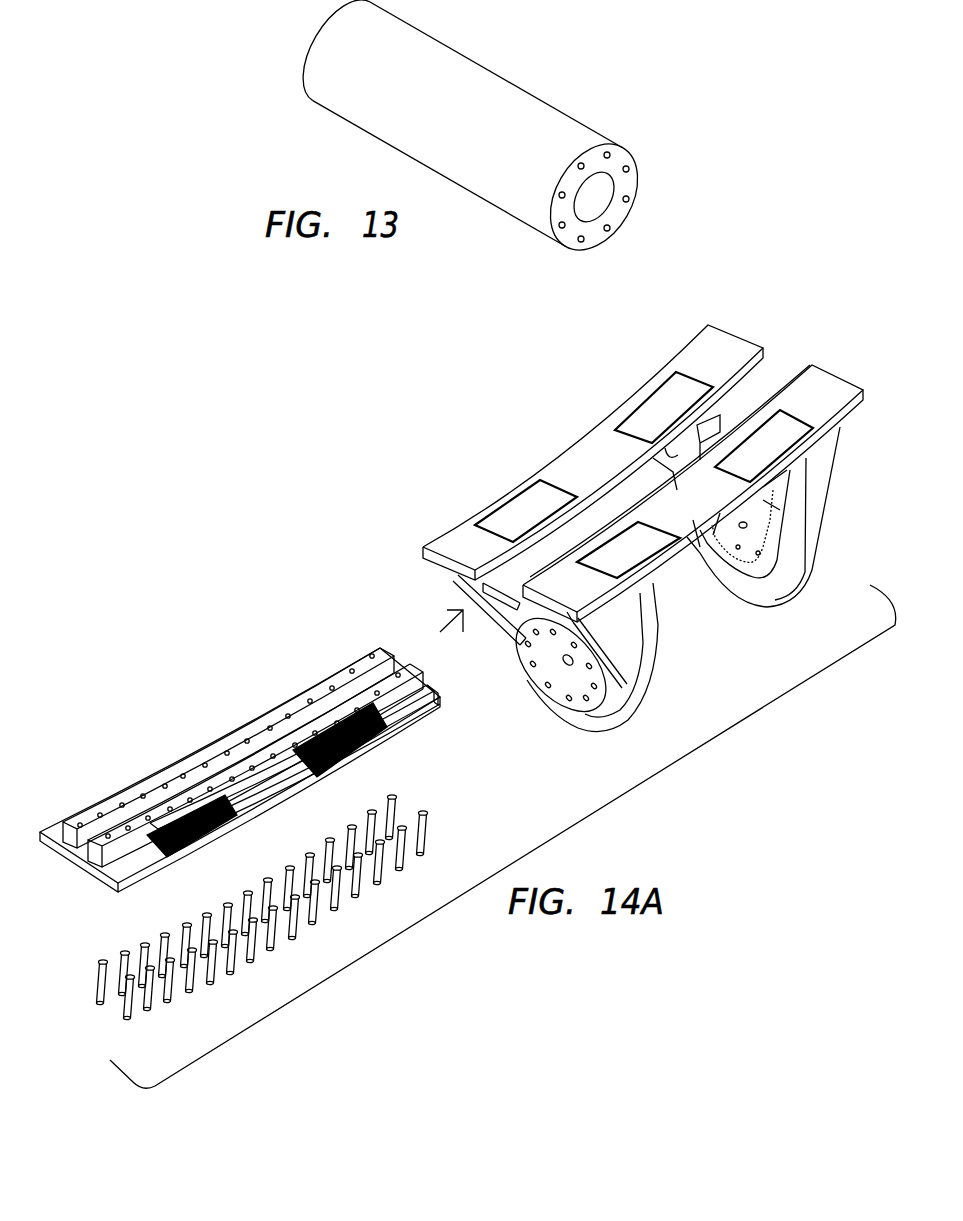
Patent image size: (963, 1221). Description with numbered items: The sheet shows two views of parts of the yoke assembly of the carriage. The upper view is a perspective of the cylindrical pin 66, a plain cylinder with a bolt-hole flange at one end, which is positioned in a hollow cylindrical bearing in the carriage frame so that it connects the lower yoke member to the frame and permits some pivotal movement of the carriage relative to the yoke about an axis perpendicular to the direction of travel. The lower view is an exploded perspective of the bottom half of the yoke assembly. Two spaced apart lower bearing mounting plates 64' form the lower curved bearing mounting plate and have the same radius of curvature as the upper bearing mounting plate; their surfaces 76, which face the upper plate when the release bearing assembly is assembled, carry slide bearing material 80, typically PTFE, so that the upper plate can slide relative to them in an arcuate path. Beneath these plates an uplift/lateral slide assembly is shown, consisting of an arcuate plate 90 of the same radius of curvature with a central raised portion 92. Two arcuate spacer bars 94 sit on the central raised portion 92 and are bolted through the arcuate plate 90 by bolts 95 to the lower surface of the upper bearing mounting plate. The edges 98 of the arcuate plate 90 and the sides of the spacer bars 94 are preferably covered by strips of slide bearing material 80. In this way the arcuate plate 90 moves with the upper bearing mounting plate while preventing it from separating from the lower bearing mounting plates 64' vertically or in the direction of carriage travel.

In FIG. 13, the cylindrical pin 66 is at (492, 75).
In FIG. 14A, the lower bearing mounting plates 64' is at (643, 468).
In FIG. 14A, the slide bearing material 80 is at (525, 493).
In FIG. 14A, the surfaces of lower bearing mounting plate 76 is at (692, 518).
In FIG. 14A, the central raised portion 92 is at (68, 858).
In FIG. 14A, the arcuate spacer bars 94 is at (200, 757).
In FIG. 14A, the arcuate plate 90 is at (430, 700).
In FIG. 14A, the edges of plate 98 is at (430, 697).
In FIG. 14A, the bolts 95 is at (170, 1008).